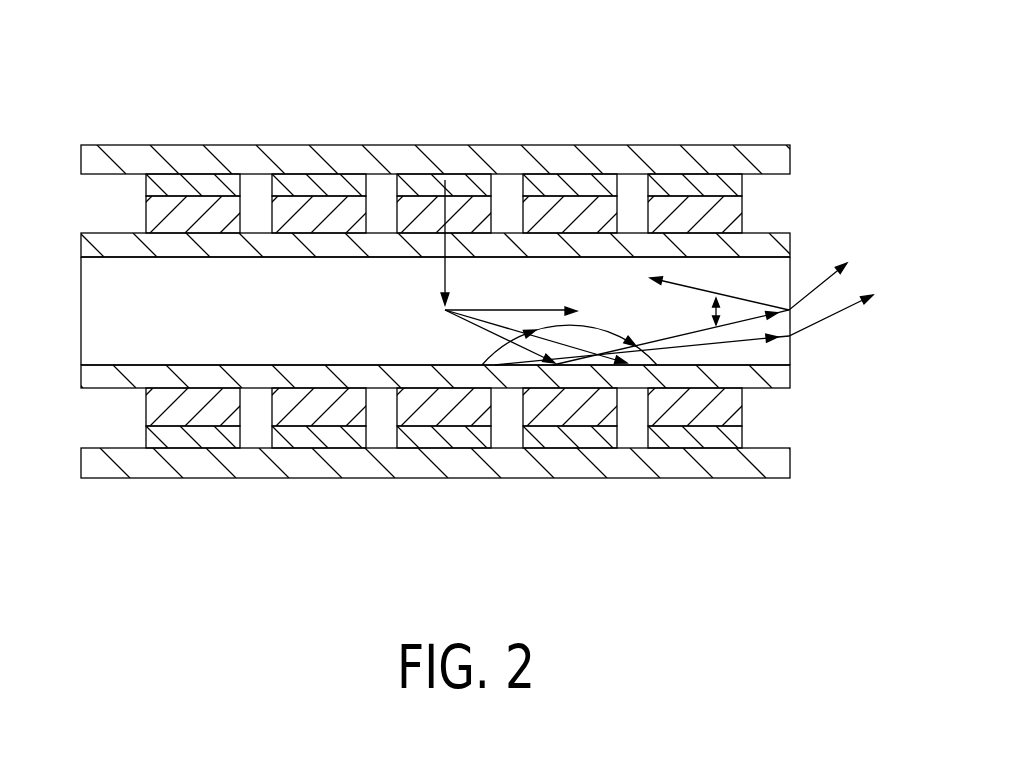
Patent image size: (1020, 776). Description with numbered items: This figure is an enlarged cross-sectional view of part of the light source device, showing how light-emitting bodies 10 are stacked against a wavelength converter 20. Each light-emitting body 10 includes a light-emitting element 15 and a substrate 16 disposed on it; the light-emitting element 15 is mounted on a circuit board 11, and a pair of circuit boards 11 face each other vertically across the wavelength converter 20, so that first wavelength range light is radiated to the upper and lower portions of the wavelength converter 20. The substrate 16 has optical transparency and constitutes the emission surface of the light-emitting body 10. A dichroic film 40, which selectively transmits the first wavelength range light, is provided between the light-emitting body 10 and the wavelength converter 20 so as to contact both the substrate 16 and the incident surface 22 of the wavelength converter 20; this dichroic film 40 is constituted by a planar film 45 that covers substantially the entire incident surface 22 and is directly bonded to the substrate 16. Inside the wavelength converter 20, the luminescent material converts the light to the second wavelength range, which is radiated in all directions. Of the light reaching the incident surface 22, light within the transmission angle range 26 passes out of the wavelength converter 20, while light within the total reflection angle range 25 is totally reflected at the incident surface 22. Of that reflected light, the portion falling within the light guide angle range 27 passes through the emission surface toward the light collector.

The light-emitting body 10 is at (437, 307).
The circuit board 11 is at (603, 157).
The light-emitting element 15 is at (205, 185).
The substrate 16 is at (210, 222).
The wavelength converter 20 is at (102, 302).
The incident surface 22 is at (322, 256).
The total reflection angle range 25 is at (496, 353).
The transmission angle range 26 is at (587, 323).
The light guide angle range 27 is at (712, 312).
The dichroic film 40 is at (472, 343).
The planar film 45 is at (780, 233).